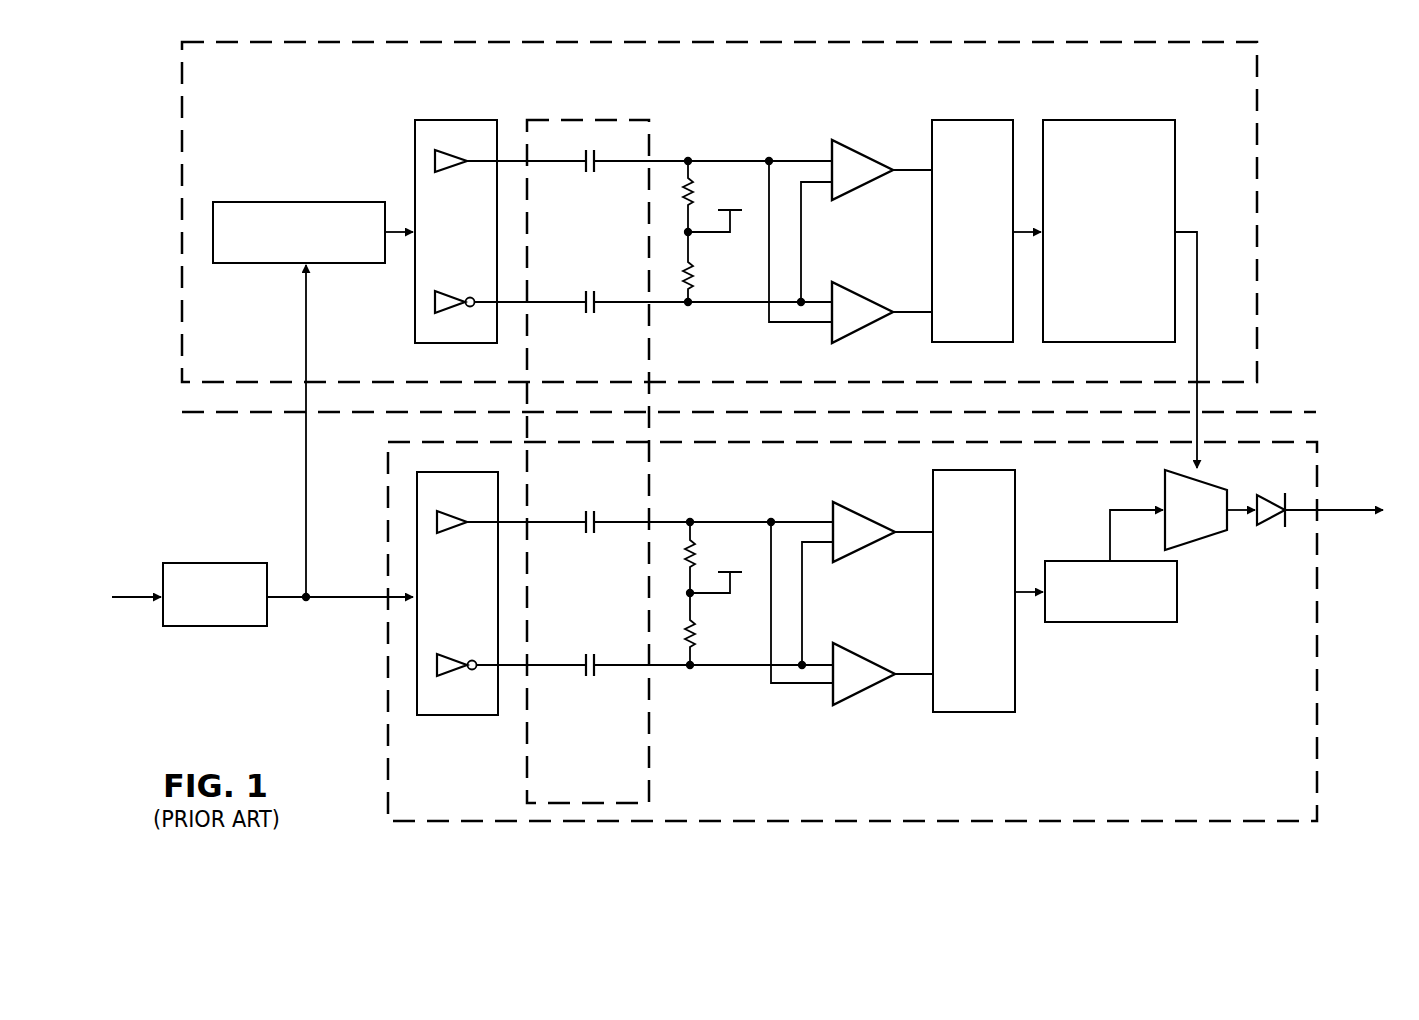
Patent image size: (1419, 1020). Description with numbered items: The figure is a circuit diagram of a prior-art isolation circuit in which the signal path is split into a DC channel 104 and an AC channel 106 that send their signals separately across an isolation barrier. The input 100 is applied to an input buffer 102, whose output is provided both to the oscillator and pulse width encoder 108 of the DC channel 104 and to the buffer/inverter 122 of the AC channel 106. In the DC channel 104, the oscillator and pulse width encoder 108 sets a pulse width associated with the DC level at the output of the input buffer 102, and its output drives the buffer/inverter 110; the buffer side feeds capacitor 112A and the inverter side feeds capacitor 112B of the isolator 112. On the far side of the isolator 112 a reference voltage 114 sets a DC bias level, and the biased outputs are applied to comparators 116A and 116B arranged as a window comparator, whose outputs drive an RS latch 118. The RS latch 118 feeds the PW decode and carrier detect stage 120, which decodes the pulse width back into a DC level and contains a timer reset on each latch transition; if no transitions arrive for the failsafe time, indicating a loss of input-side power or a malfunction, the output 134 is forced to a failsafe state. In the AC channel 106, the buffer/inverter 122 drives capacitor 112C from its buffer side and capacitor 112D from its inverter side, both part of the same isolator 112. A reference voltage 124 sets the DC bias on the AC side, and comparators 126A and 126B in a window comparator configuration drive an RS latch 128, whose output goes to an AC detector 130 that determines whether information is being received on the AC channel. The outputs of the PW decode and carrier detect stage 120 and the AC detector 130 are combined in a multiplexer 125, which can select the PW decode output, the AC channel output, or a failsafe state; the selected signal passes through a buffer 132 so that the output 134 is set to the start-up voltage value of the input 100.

The input 100 is at (138, 599).
The input buffer 102 is at (217, 628).
The DC channel 104 is at (180, 190).
The AC channel 106 is at (386, 713).
The oscillator and pulse width encoder 108 is at (283, 201).
The buffer/inverter 110 is at (449, 118).
The isolator 112 is at (572, 118).
The capacitor 112A is at (590, 176).
The capacitor 112B is at (590, 288).
The capacitor 112C is at (590, 537).
The capacitor 112D is at (590, 651).
The reference voltage 114 is at (693, 237).
The window comparator 116A is at (882, 140).
The window comparator 116B is at (882, 280).
The RS latch 118 is at (970, 119).
The PW decode and carrier detect stage 120 is at (1112, 119).
The buffer/inverter 122 is at (452, 719).
The reference voltage 124 is at (695, 598).
The multiplexer 125 is at (1208, 541).
The window comparator 126A is at (872, 693).
The window comparator 126B is at (866, 550).
The RS latch 128 is at (974, 714).
The AC detector 130 is at (1117, 624).
The buffer 132 is at (1271, 527).
The output 134 is at (1342, 513).